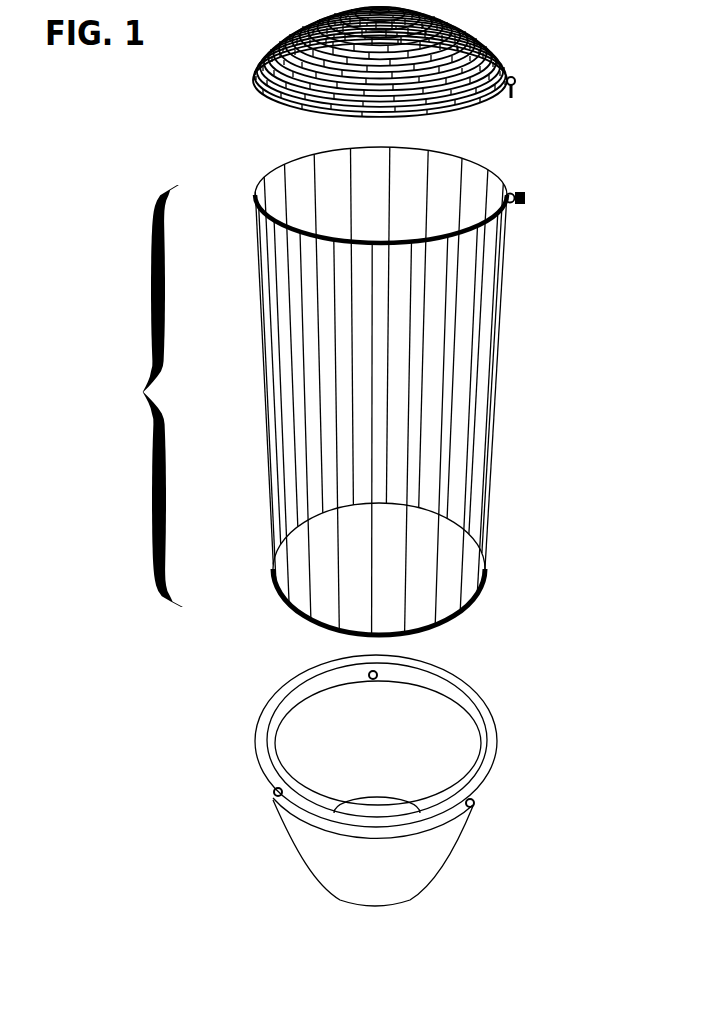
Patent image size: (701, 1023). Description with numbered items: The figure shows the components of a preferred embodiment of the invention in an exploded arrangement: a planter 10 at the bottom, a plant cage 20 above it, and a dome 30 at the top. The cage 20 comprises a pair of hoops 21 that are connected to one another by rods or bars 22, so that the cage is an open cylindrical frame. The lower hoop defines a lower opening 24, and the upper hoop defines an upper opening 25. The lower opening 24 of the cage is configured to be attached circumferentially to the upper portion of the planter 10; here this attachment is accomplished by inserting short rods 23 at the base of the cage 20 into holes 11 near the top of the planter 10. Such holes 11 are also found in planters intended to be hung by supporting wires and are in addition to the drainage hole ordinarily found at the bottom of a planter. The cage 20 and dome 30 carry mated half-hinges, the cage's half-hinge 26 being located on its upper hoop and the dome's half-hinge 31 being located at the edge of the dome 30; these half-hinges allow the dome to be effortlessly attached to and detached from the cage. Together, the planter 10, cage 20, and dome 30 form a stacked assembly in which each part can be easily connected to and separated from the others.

The planter 10 is at (255, 738).
The holes 11 is at (373, 680).
The plant cage 20 is at (143, 392).
The hoops 21 is at (363, 248).
The rods or bars 22 is at (262, 390).
The short rods 23 is at (379, 602).
The lower opening 24 is at (348, 574).
The upper opening 25 is at (383, 208).
The half-hinge 26 is at (541, 217).
The dome 30 is at (253, 79).
The half-hinge 31 is at (544, 102).